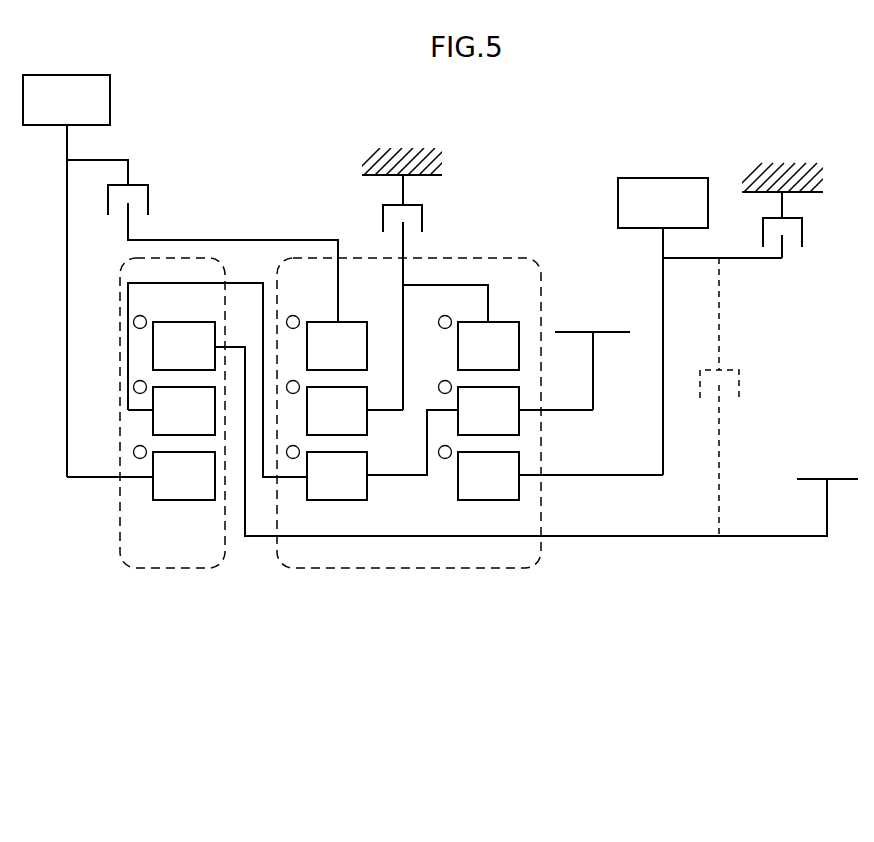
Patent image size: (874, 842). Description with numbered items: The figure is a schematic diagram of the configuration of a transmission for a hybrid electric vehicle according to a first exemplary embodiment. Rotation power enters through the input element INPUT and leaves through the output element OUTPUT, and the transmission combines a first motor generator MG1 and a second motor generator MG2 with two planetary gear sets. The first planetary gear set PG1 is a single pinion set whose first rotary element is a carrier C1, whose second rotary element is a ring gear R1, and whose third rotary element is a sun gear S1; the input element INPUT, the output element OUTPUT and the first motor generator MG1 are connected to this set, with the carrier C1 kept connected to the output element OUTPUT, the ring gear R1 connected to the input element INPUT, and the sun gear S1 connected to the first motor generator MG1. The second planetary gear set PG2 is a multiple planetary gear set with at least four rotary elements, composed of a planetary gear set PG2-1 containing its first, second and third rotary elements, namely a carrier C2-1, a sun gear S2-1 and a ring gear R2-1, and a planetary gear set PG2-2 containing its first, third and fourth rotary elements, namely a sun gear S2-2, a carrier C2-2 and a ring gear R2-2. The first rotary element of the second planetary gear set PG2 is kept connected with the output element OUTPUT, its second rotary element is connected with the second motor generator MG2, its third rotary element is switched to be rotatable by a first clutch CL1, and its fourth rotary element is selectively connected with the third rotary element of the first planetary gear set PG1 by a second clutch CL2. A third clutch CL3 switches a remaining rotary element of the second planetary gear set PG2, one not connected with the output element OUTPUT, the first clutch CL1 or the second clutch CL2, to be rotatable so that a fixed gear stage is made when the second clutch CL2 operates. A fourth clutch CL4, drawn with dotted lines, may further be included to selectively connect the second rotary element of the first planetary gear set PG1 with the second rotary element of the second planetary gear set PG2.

The first motor generator MG1 is at (75, 276).
The second motor generator MG2 is at (700, 326).
The first clutch CL1 is at (408, 279).
The second clutch CL2 is at (223, 253).
The third clutch CL3 is at (787, 210).
The fourth clutch CL4 is at (741, 397).
The first planetary gear set PG1 is at (137, 568).
The second planetary gear set PG2 is at (293, 568).
The planetary gear set PG2-1 is at (490, 501).
The planetary gear set PG2-2 is at (338, 501).
The ring gear R1 is at (481, 426).
The carrier C1 is at (175, 408).
The sun gear S1 is at (141, 473).
The ring gear R2-2 is at (327, 343).
The carrier C2-2 is at (345, 408).
The sun gear S2-2 is at (373, 455).
The ring gear R2-1 is at (461, 327).
The carrier C2-1 is at (516, 408).
The sun gear S2-1 is at (551, 473).
The output element OUTPUT is at (592, 360).
The input element INPUT is at (827, 495).